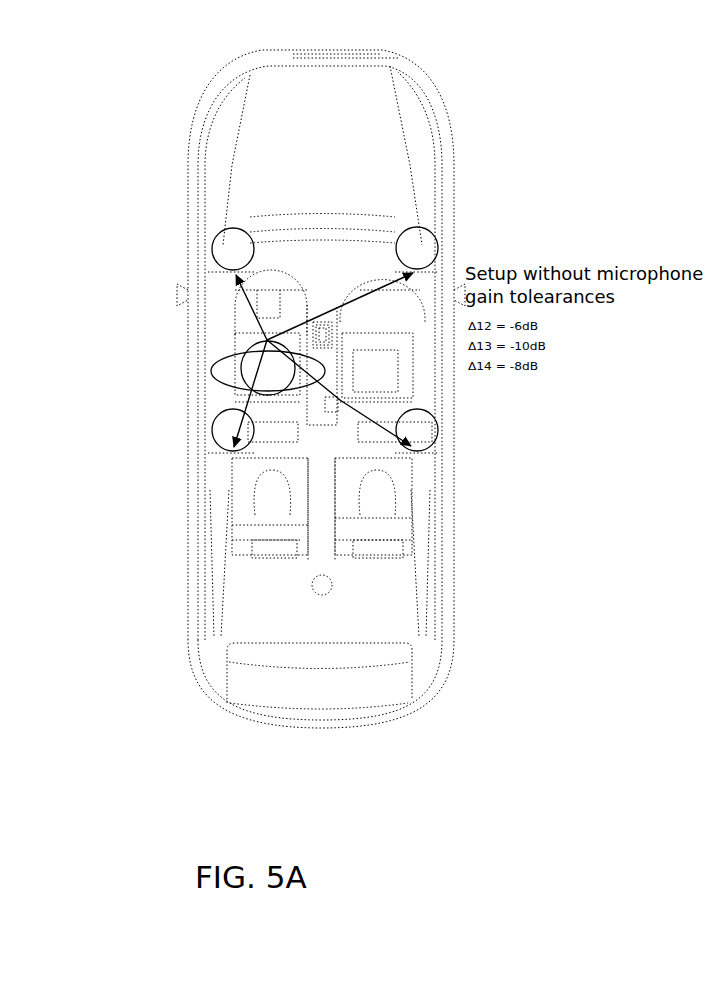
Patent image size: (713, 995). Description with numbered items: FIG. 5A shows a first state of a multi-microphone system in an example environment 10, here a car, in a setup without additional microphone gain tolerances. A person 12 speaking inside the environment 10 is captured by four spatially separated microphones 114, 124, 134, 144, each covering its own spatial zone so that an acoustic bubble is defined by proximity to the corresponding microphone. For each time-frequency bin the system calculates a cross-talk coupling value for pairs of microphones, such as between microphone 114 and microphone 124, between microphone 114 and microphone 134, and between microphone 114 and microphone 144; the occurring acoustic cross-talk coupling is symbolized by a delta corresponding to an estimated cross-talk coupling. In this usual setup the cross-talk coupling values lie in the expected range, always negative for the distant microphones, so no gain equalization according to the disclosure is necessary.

The environment 10 is at (272, 230).
The person 12 is at (223, 362).
The microphone 114 is at (230, 232).
The microphone 124 is at (423, 248).
The microphone 134 is at (225, 428).
The microphone 144 is at (435, 425).